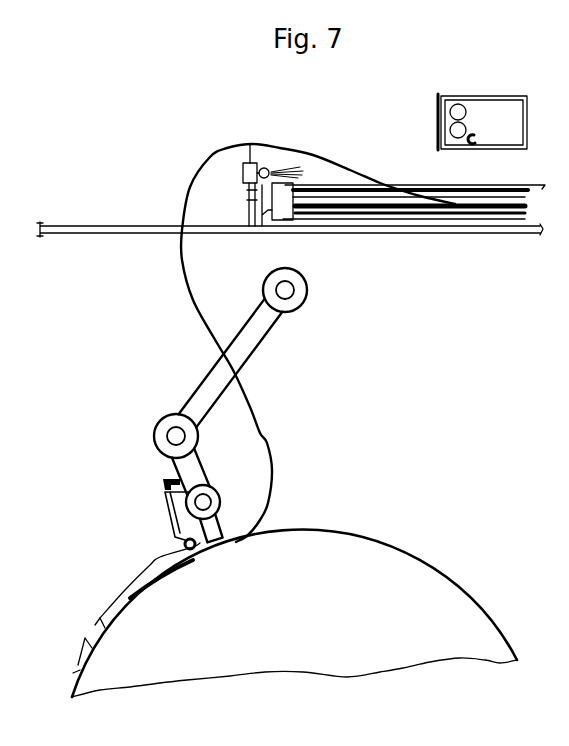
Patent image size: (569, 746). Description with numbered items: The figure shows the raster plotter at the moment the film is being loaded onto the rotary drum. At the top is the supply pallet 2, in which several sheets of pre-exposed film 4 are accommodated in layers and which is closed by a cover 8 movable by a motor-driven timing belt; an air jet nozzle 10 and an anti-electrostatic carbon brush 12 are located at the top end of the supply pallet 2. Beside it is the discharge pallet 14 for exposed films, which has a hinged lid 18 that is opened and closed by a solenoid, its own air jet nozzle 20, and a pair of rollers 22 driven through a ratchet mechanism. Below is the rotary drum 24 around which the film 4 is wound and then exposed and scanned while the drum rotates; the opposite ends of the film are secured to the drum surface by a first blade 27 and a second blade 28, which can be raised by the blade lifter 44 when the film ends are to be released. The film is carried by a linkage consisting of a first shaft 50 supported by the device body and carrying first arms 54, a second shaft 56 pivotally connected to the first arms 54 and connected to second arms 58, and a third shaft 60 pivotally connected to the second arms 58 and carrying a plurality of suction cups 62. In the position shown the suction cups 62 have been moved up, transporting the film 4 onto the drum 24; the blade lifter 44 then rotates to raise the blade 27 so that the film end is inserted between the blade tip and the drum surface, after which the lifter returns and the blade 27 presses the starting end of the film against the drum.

The supply pallet 2 is at (407, 186).
The film 4 is at (310, 153).
The cover 8 is at (540, 186).
The air jet nozzle 10 is at (267, 170).
The anti-electrostatic carbon brush 12 is at (241, 185).
The discharge pallet 14 is at (519, 98).
The lid 18 is at (456, 96).
The air jet nozzle 20 is at (468, 142).
The rollers 22 is at (467, 116).
The rotary drum 24 is at (447, 583).
The blade 27 is at (138, 577).
The blade 28 is at (80, 658).
The blade lifter 44 is at (165, 508).
The first shaft 50 is at (288, 290).
The first arm 54 is at (247, 350).
The second shaft 56 is at (176, 436).
The second arm 58 is at (192, 468).
The third shaft 60 is at (205, 502).
The suction cups 62 is at (233, 540).